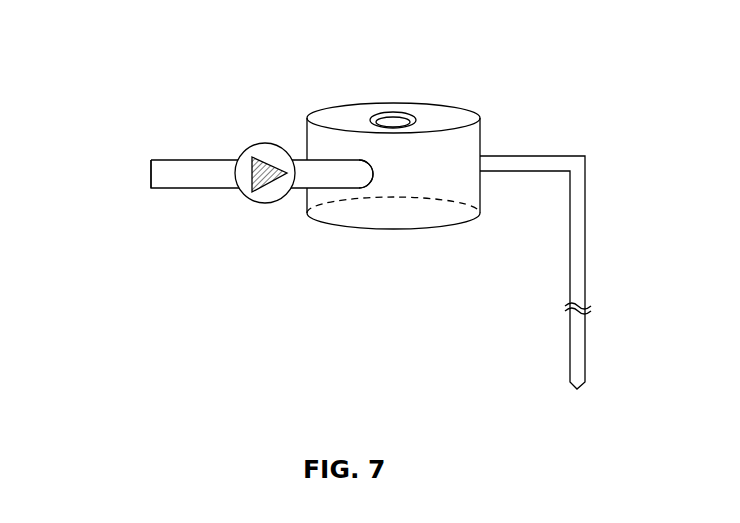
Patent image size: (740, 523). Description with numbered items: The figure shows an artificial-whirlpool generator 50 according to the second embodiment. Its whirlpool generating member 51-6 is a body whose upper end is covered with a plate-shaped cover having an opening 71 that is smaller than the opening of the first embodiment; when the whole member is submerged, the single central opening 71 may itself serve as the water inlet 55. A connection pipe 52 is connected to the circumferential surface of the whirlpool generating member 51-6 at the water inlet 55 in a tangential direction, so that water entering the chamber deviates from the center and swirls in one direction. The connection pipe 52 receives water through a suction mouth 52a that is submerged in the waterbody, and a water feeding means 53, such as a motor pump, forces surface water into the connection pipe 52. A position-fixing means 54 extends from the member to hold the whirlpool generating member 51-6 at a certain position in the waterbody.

The artificial-whirlpool generator 50 is at (509, 87).
The whirlpool generating member 51-6 is at (441, 105).
The opening 71 is at (398, 114).
The connection pipe 52 is at (195, 160).
The suction mouth 52a is at (150, 173).
The water feeding means 53 is at (266, 144).
The water inlet 55 is at (357, 186).
The position-fixing means 54 is at (586, 233).